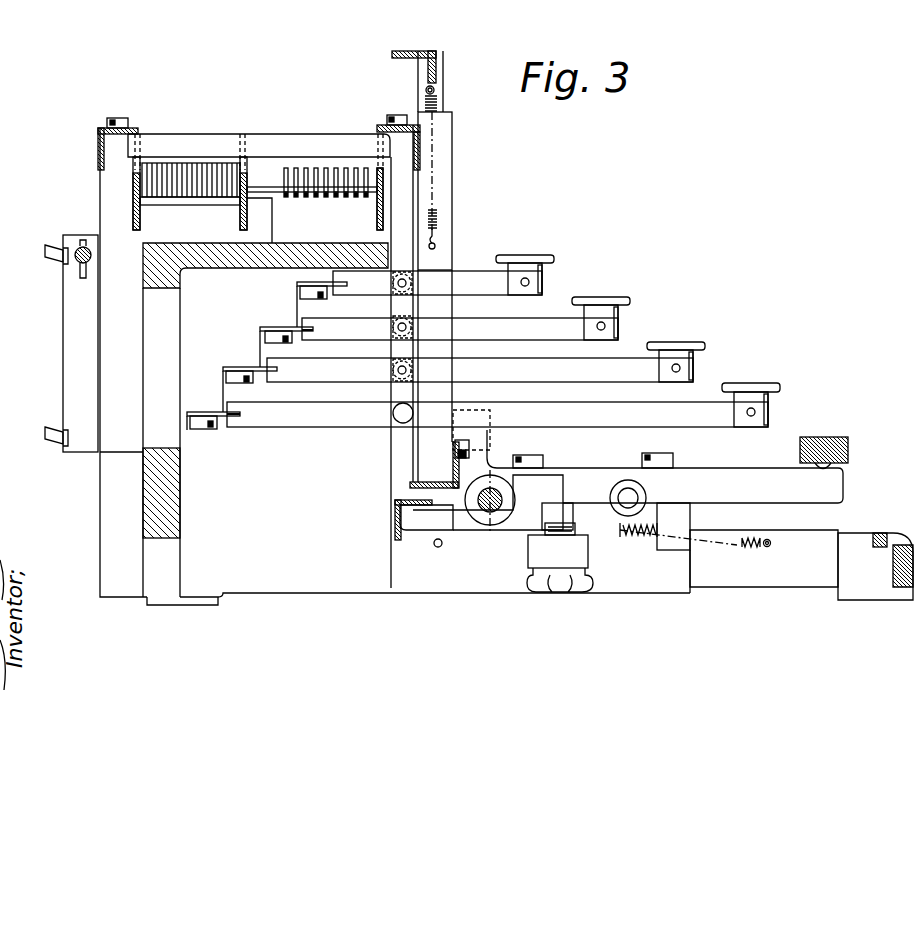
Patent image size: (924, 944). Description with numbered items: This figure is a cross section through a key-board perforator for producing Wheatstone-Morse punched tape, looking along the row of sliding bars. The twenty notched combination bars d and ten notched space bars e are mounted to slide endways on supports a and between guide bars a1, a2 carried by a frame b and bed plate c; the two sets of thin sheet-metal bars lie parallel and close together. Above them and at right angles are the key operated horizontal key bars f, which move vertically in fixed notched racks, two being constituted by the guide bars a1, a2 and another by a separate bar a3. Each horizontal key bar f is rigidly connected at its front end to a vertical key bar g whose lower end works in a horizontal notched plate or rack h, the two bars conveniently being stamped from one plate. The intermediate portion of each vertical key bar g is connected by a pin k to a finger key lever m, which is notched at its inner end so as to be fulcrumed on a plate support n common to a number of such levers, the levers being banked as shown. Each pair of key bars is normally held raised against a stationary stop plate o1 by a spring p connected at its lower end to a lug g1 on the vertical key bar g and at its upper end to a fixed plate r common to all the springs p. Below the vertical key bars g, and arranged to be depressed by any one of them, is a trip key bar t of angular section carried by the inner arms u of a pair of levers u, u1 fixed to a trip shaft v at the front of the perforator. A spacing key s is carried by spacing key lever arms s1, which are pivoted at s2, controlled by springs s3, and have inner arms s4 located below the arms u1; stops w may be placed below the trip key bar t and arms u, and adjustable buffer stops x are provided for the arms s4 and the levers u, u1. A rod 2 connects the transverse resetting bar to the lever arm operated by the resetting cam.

The rod 2 is at (83, 245).
The supports a is at (157, 200).
The guide bar a1 is at (133, 222).
The guide bar a2 is at (242, 219).
The separate bar a3 is at (383, 213).
The combination bars d is at (199, 197).
The space bars e is at (320, 168).
The horizontal key bars f is at (278, 134).
The stationary horizontal stop plate o1 is at (388, 126).
The fixed plate r is at (438, 80).
The spring p is at (440, 141).
The vertical key bar g is at (400, 197).
The lug g1 is at (436, 247).
The frame b is at (182, 306).
The finger key lever m is at (522, 358).
The plate support n is at (277, 327).
The pin k is at (391, 294).
The horizontal notched plate h is at (410, 489).
The trip key bar t is at (424, 524).
The stops w is at (437, 548).
The lever arm u is at (466, 526).
The trip shaft v is at (501, 528).
The lever arm u1 is at (488, 501).
The adjustable buffer stop x is at (566, 518).
The spacing key s is at (850, 446).
The spacing key lever arm s1 is at (727, 480).
The pivot s2 is at (640, 497).
The spring s3 is at (678, 548).
The inner arm s4 is at (694, 545).
The bed plate c is at (897, 545).